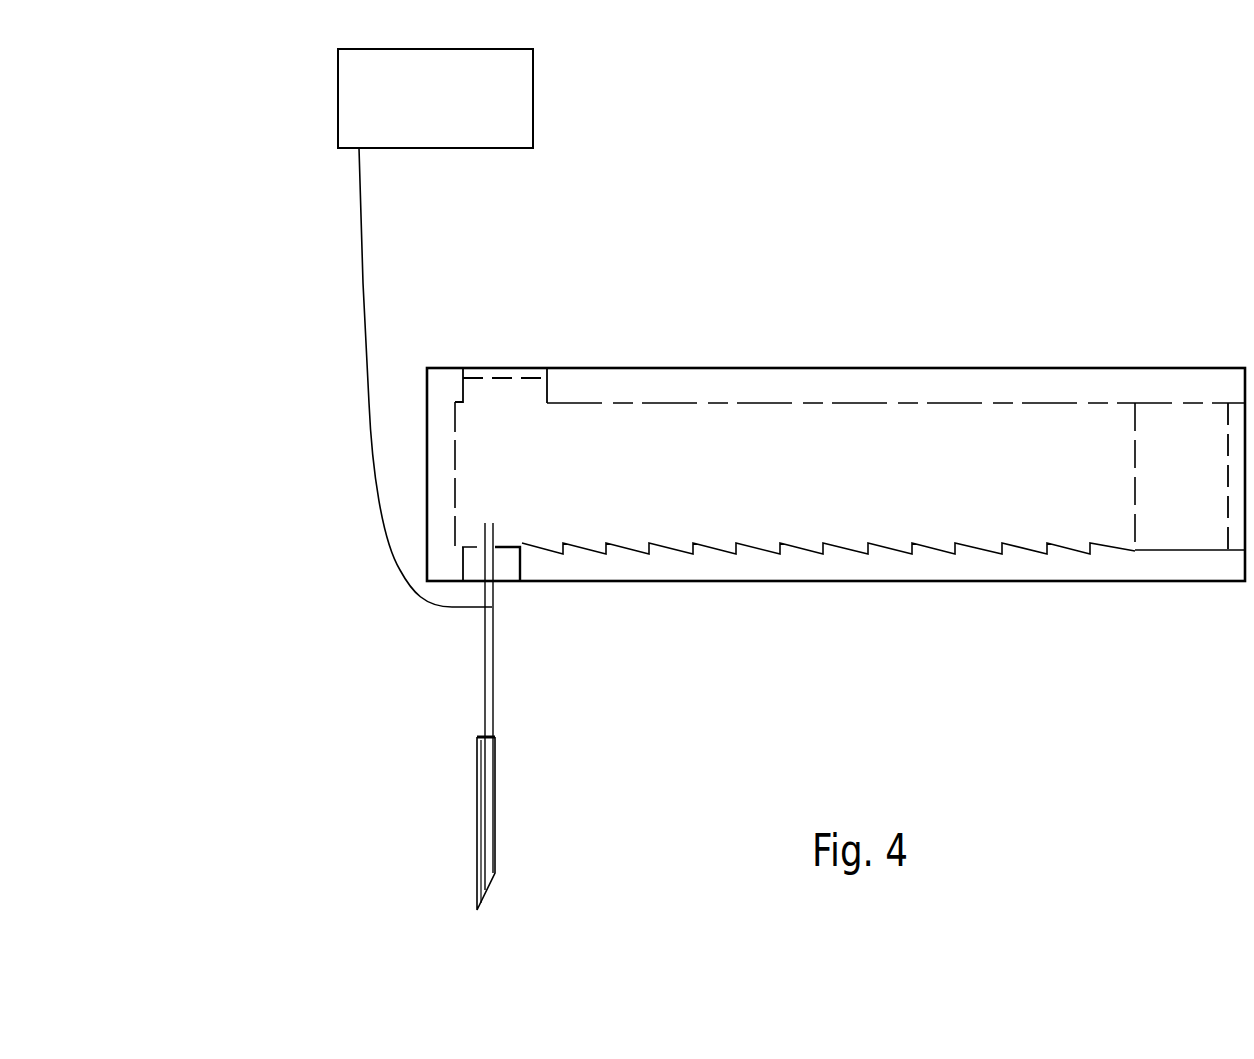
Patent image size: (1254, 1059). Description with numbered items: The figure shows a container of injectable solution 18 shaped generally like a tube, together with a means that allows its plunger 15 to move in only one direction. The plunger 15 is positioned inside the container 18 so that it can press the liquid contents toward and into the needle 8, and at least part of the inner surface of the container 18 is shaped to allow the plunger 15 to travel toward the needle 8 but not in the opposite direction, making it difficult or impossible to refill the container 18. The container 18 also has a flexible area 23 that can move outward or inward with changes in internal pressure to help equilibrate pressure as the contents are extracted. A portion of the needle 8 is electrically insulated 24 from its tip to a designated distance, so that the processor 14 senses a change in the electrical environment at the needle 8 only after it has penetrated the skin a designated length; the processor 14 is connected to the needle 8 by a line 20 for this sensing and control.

The processor 14 is at (350, 117).
The cable 20 is at (362, 287).
The flexible areas 23 is at (500, 375).
The plunger 15 is at (1169, 505).
The container of injectable solution 18 is at (905, 572).
The needle 8 is at (487, 695).
The electrically insulated portion 24 is at (492, 810).